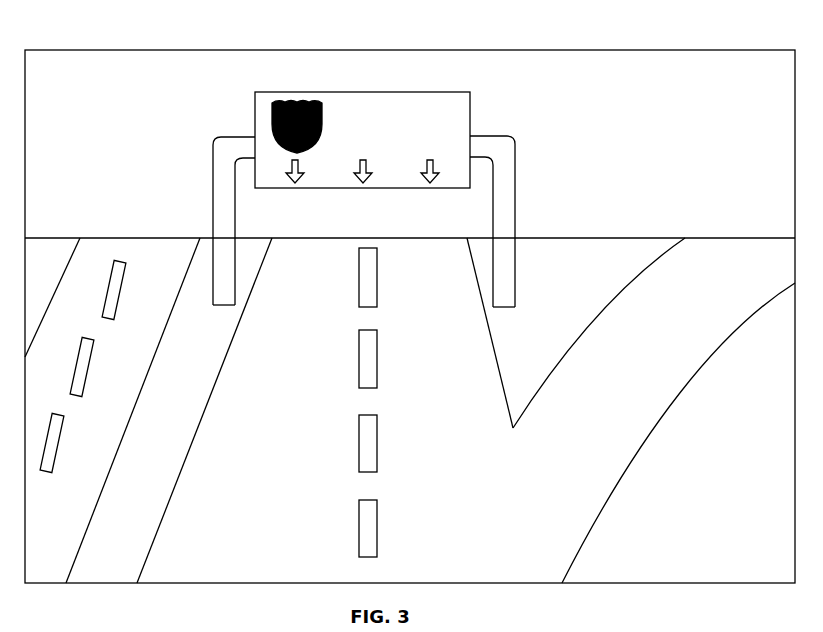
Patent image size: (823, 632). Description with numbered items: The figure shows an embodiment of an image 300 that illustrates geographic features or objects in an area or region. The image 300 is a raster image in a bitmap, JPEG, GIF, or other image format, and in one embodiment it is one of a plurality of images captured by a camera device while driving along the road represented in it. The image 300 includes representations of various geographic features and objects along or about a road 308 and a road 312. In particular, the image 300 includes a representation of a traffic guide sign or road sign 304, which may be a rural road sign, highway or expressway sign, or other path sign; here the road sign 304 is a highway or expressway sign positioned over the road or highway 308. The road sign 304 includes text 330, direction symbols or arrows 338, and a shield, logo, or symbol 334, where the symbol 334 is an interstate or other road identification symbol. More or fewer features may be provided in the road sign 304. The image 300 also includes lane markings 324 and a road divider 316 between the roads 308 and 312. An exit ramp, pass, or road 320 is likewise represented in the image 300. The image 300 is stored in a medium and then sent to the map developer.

The image 300 is at (718, 50).
The road sign 304 is at (407, 92).
The road 308 is at (247, 388).
The road 312 is at (152, 253).
The road divider 316 is at (142, 522).
The exit ramp 320 is at (680, 348).
The lane markings 324 is at (57, 450).
The text 330 is at (421, 108).
The symbol 334 is at (322, 107).
The arrows 338 is at (430, 188).